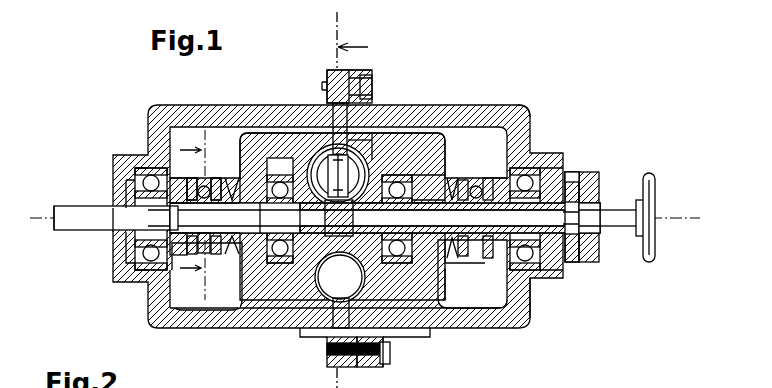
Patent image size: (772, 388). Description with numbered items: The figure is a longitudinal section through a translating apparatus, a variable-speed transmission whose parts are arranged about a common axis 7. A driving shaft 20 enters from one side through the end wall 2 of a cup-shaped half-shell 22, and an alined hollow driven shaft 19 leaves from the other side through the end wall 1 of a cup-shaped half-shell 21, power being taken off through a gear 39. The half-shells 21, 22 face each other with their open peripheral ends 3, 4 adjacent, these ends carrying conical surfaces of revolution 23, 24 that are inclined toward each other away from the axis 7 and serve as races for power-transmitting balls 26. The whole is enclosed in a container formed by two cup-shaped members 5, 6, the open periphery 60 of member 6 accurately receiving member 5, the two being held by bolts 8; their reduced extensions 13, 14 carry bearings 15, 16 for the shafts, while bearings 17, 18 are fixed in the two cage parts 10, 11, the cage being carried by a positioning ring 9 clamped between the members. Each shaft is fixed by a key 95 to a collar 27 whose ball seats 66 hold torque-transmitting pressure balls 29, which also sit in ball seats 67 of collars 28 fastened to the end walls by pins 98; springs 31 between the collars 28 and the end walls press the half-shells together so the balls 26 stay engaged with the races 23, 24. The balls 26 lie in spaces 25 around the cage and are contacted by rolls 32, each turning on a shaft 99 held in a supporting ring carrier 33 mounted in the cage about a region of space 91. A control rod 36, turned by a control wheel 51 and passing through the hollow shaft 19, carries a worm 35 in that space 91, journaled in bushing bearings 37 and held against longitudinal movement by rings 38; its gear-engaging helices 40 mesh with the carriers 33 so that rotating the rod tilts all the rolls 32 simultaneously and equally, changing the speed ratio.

The end wall 1 is at (428, 262).
The end wall 2 is at (236, 298).
The open peripheral end 3 is at (373, 92).
The open peripheral end 4 is at (334, 148).
The cup-shaped member 5 is at (528, 118).
The cup-shaped member 6 is at (282, 300).
The common axis 7 is at (360, 218).
The bolts 8 is at (374, 75).
The positioning ring 9 is at (189, 176).
The cage part 10 is at (505, 105).
The cage part 11 is at (196, 212).
The extension 13 is at (590, 185).
The extension 14 is at (132, 190).
The bearing 15 is at (590, 255).
The bearing 16 is at (160, 240).
The bearing 17 is at (485, 322).
The bearing 18 is at (255, 300).
The driven shaft 19 is at (608, 206).
The driving shaft 20 is at (70, 212).
The cup-shaped half-shell 21 is at (450, 288).
The cup-shaped half-shell 22 is at (272, 300).
The surface of revolution 23 is at (368, 140).
The surface of revolution 24 is at (320, 150).
The spaces 25 is at (334, 312).
The power-transmitting balls 26 is at (388, 305).
The collars 27 is at (134, 174).
The collars 28 is at (210, 180).
The torque-transmitting pressure balls 29 is at (520, 185).
The springs 31 is at (492, 190).
The roll 32 is at (378, 150).
The supporting ring carrier 33 is at (405, 152).
The worm 35 is at (400, 350).
The rod 36 is at (652, 195).
The bushing bearings 37 is at (312, 300).
The rings 38 is at (420, 185).
The gear 39 is at (600, 170).
The gear-engaging helices 40 is at (430, 140).
The control wheel 51 is at (656, 233).
The open periphery 60 is at (352, 362).
The ball seats 66 is at (135, 218).
The ball seats 67 is at (472, 195).
The region of space 91 is at (420, 318).
The key 95 is at (165, 230).
The pins 98 is at (208, 255).
The shaft 99 is at (308, 160).